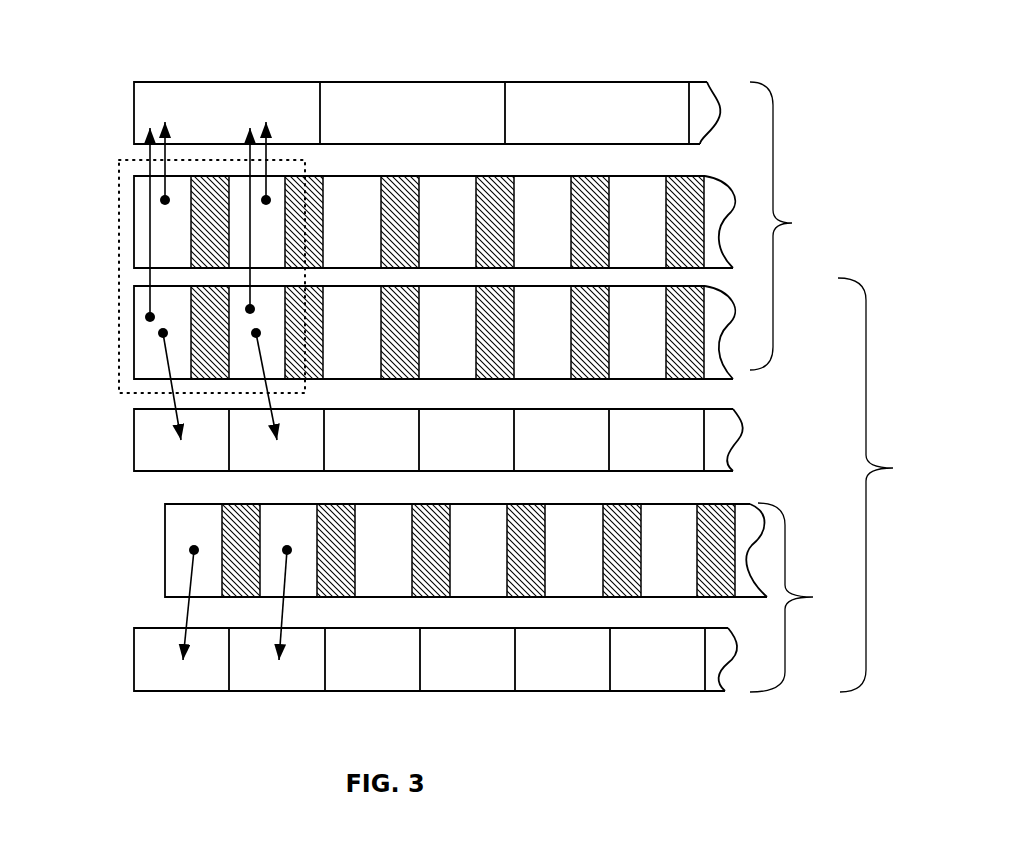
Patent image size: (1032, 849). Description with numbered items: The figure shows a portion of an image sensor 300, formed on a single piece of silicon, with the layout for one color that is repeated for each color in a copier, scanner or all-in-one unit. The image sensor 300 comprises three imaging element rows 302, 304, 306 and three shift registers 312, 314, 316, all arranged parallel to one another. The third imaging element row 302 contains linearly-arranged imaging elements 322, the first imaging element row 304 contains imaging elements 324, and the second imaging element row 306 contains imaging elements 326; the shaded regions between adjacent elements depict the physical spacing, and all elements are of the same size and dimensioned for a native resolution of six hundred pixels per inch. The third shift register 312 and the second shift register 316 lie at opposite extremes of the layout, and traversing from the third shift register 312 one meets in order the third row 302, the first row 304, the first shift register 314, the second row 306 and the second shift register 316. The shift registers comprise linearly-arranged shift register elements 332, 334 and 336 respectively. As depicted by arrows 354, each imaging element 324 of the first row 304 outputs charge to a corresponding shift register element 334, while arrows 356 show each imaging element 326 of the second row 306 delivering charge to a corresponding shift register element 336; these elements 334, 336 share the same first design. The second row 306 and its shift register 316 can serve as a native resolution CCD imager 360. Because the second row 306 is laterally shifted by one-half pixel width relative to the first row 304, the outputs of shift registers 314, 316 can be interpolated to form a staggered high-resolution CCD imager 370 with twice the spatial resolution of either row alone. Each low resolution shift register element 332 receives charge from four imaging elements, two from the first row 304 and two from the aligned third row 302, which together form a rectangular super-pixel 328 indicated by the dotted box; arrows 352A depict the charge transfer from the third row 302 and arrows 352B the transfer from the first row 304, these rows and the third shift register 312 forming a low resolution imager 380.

The image sensor 300 is at (900, 174).
The third imaging element row 302 is at (637, 175).
The first imaging element row 304 is at (637, 379).
The second imaging element row 306 is at (668, 597).
The third shift register 312 is at (532, 82).
The first shift register 314 is at (658, 472).
The second shift register 316 is at (653, 692).
The imaging elements 322 is at (447, 222).
The imaging elements 324 is at (447, 332).
The imaging elements 326 is at (478, 550).
The super-pixel 328 is at (119, 313).
The low resolution shift register elements 332 is at (431, 113).
The shift register elements 334 is at (446, 440).
The shift register elements 336 is at (467, 659).
The arrows 352A is at (167, 152).
The arrows 352B is at (248, 258).
The arrows 354 is at (167, 358).
The arrows 356 is at (185, 617).
The native resolution CCD imager 360 is at (803, 597).
The staggered high-resolution CCD imager 370 is at (886, 485).
The low resolution imager 380 is at (793, 226).